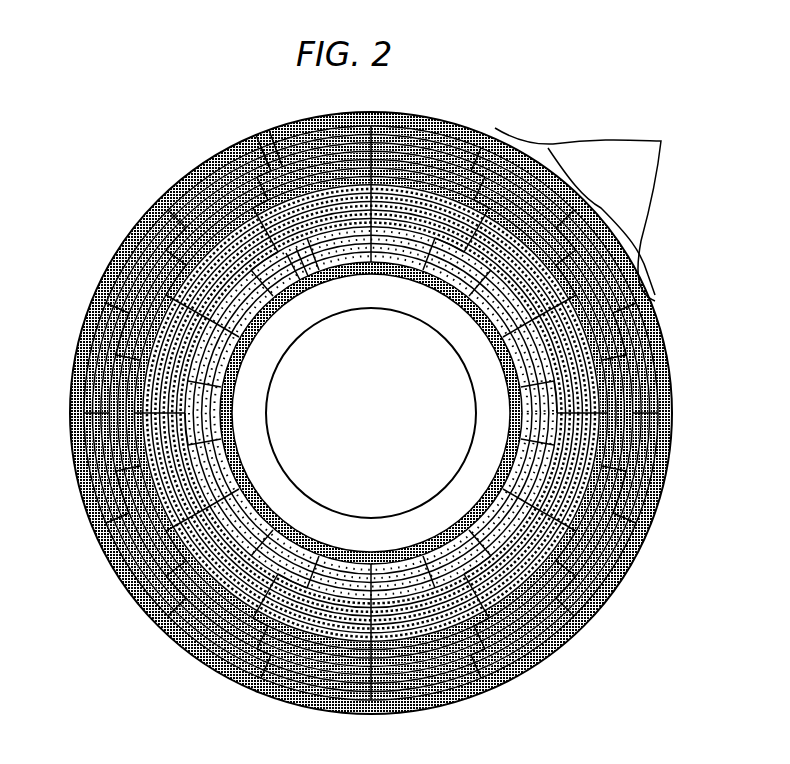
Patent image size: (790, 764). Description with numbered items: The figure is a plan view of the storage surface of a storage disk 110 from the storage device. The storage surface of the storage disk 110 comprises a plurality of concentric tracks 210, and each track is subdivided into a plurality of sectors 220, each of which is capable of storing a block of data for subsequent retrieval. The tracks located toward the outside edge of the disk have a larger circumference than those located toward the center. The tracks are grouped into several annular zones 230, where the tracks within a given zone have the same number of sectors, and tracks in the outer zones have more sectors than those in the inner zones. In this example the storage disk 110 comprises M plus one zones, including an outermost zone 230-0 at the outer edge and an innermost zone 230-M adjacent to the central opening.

The storage disk 110 is at (122, 178).
The concentric tracks 210 is at (588, 583).
The sectors 220 is at (602, 214).
The annular zones 230 is at (588, 446).
The outermost zone 230-0 is at (255, 126).
The innermost zone 230-M is at (284, 258).